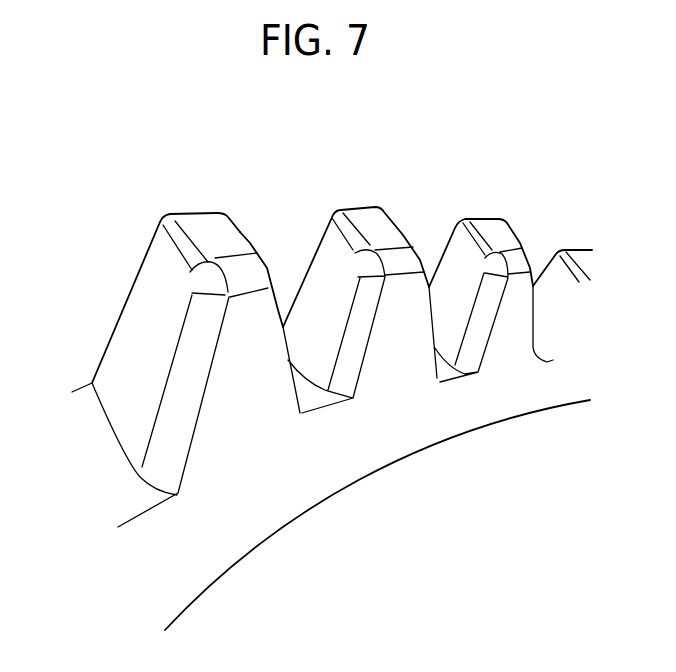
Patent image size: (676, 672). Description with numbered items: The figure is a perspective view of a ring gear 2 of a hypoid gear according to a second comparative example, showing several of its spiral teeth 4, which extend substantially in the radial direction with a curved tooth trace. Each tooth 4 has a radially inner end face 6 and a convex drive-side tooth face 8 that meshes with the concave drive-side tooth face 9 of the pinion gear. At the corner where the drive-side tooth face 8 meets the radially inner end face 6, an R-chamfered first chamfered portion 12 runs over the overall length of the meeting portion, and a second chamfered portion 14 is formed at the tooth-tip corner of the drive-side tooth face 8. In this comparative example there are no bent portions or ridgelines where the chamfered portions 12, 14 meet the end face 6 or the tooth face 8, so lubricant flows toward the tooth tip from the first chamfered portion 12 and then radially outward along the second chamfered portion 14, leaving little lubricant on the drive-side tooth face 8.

The ring gear 2 is at (324, 360).
The teeth 4 is at (170, 379).
The radially inner end face 6 is at (255, 388).
The drive-side tooth face 8 is at (148, 287).
The drive-side tooth face 9 is at (247, 240).
The first chamfered portion 12 is at (177, 432).
The second chamfered portion 14 is at (166, 232).